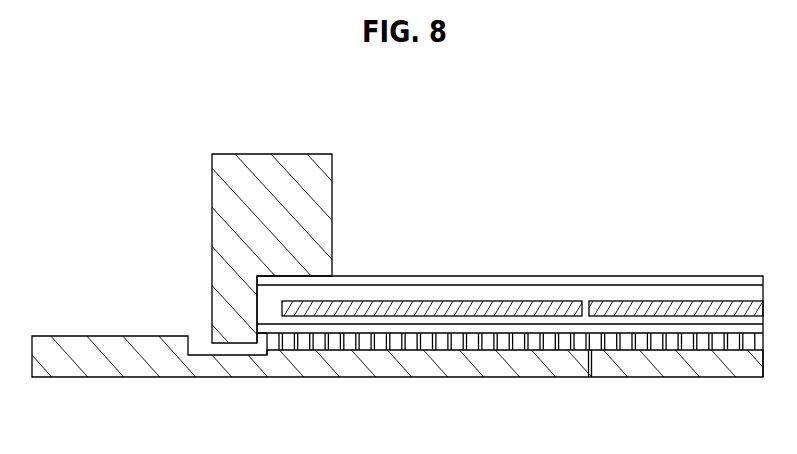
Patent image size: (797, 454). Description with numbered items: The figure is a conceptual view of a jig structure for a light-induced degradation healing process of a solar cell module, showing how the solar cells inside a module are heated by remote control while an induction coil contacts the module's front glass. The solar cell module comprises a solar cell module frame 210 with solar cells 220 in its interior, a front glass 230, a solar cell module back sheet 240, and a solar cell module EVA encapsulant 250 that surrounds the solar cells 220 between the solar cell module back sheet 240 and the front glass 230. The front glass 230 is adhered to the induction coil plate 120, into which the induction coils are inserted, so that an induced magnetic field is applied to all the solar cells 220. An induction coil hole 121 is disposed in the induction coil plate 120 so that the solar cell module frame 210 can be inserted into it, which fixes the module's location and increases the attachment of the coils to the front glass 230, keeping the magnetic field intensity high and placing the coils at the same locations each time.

The induction coil plate 120 is at (140, 365).
The induction coil hole 121 is at (323, 345).
The solar cell module frame 210 is at (268, 167).
The solar cells 220 is at (352, 305).
The front glass 230 is at (437, 332).
The solar cell module back sheet 240 is at (518, 274).
The solar cell module EVA encapsulant 250 is at (612, 296).